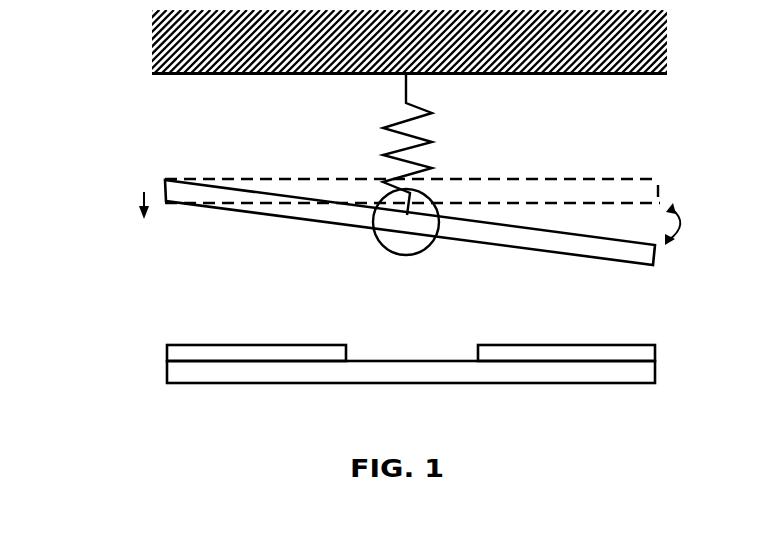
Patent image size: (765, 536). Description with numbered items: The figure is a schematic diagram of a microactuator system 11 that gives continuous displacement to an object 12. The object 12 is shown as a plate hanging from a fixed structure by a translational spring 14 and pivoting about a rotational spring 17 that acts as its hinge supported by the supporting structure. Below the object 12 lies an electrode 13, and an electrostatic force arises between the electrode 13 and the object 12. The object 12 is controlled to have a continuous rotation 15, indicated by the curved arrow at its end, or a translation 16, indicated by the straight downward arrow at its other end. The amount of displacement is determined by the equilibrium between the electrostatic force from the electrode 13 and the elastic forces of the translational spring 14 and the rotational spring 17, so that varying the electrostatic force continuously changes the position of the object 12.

The microactuator system 11 is at (98, 293).
The object 12 is at (485, 245).
The electrode 13 is at (237, 342).
The translational spring 14 is at (426, 106).
The continuous rotation 15 is at (667, 213).
The translation 16 is at (152, 208).
The rotational spring 17 is at (372, 240).